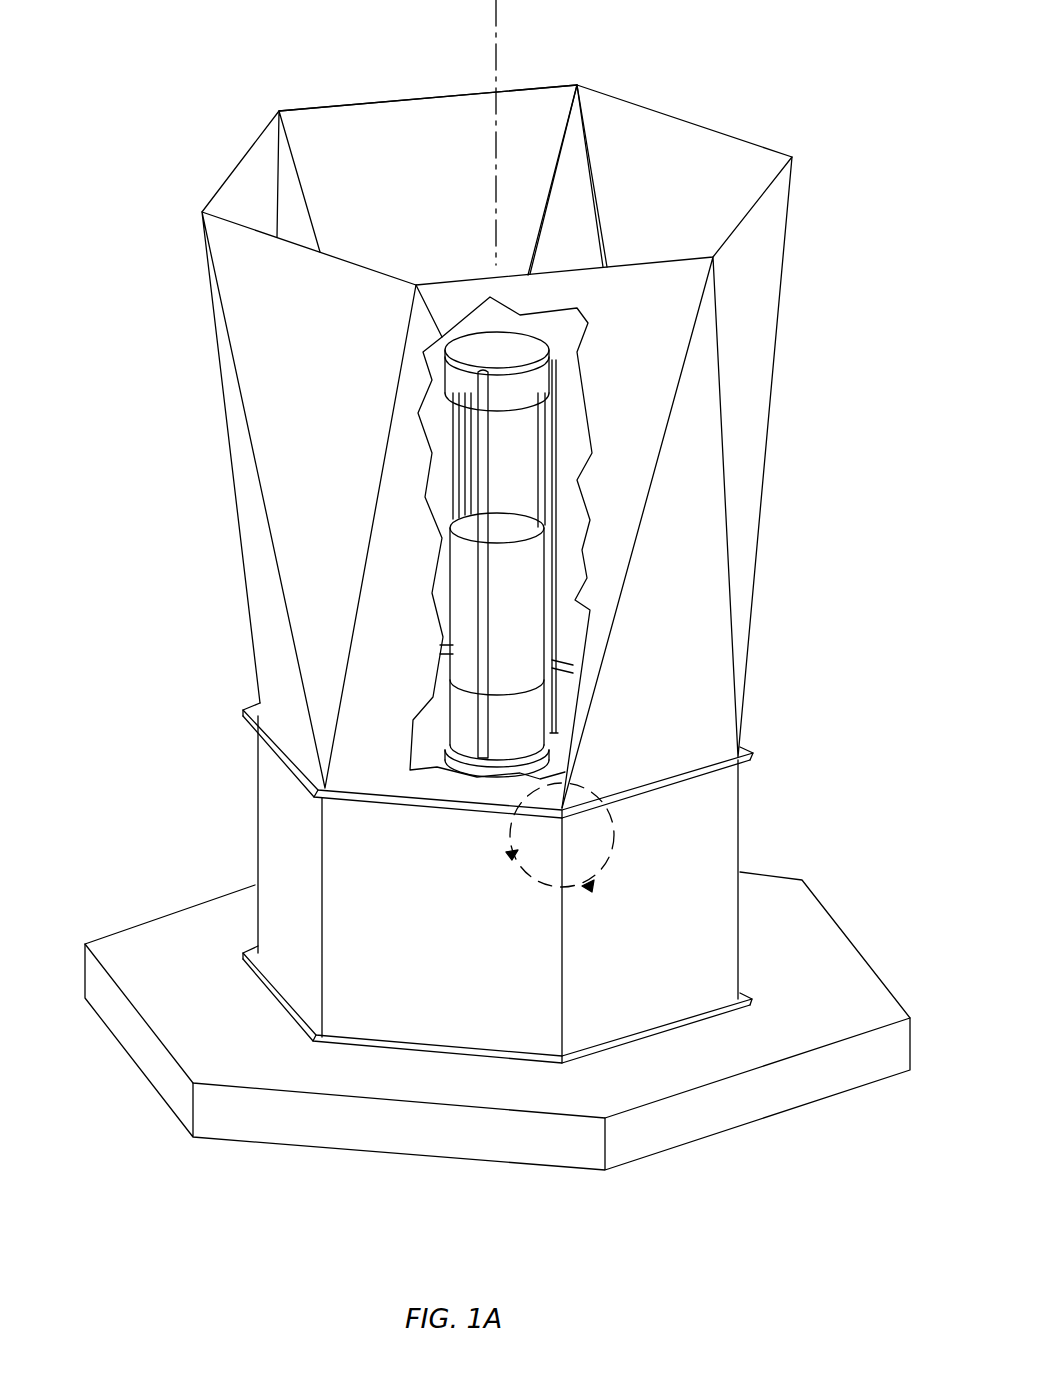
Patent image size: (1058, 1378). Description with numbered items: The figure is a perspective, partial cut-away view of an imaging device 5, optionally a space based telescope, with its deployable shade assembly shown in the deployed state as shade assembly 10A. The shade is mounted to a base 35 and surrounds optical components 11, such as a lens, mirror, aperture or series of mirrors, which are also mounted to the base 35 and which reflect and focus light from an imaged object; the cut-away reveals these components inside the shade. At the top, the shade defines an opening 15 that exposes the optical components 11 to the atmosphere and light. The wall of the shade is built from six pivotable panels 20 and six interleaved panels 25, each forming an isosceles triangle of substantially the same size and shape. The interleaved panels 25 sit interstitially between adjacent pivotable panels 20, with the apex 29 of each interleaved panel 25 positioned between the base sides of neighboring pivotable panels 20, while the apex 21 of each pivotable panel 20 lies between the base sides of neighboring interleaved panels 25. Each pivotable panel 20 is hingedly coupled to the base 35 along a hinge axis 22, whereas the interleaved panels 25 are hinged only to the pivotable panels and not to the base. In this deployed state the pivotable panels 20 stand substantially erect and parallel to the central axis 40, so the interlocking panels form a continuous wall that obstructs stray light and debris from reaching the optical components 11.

The imaging device 5 is at (205, 48).
The shade assembly in deployed state 10A is at (750, 114).
The optical components 11 is at (538, 380).
The opening 15 is at (400, 155).
The pivotable panels 20 is at (290, 173).
The apex of pivotable panel 21 is at (578, 84).
The hinge axis 22 is at (735, 740).
The interleaved panels 25 is at (238, 181).
The apex of interleaved panel 29 is at (740, 648).
The base 35 is at (692, 850).
The central axis 40 is at (497, 30).